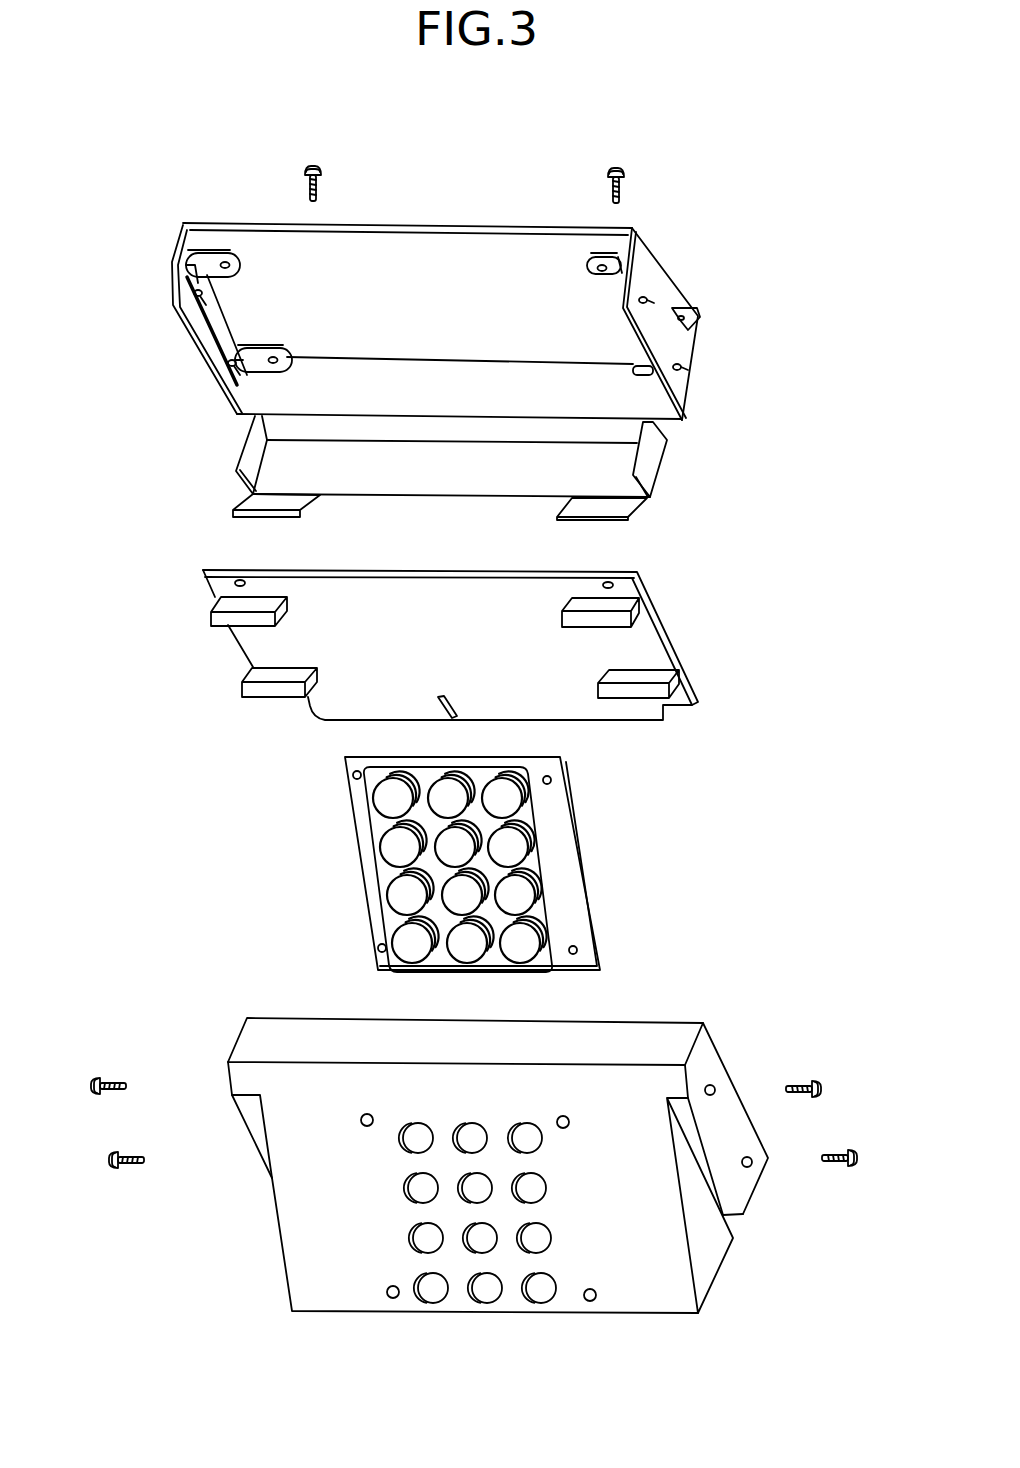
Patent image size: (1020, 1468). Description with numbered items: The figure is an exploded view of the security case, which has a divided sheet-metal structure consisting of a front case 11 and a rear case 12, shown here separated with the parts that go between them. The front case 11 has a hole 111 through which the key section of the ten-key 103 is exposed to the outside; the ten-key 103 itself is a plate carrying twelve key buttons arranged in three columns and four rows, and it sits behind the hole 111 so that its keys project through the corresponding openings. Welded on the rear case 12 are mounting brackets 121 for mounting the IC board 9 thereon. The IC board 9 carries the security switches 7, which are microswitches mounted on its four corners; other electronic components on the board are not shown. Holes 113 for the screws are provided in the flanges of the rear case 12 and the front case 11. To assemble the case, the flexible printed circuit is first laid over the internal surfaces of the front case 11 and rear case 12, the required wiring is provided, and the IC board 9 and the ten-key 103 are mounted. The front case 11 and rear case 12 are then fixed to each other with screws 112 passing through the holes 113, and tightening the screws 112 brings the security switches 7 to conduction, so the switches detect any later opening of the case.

The rear case 12 is at (183, 224).
The mounting brackets 121 is at (590, 270).
The holes for the screws 113 is at (645, 300).
The IC board 9 is at (672, 638).
The security switch 7 is at (638, 610).
The ten-key 103 is at (384, 876).
The front case 11 is at (258, 1027).
The hole 111 is at (408, 1138).
The screws 112 is at (115, 1080).